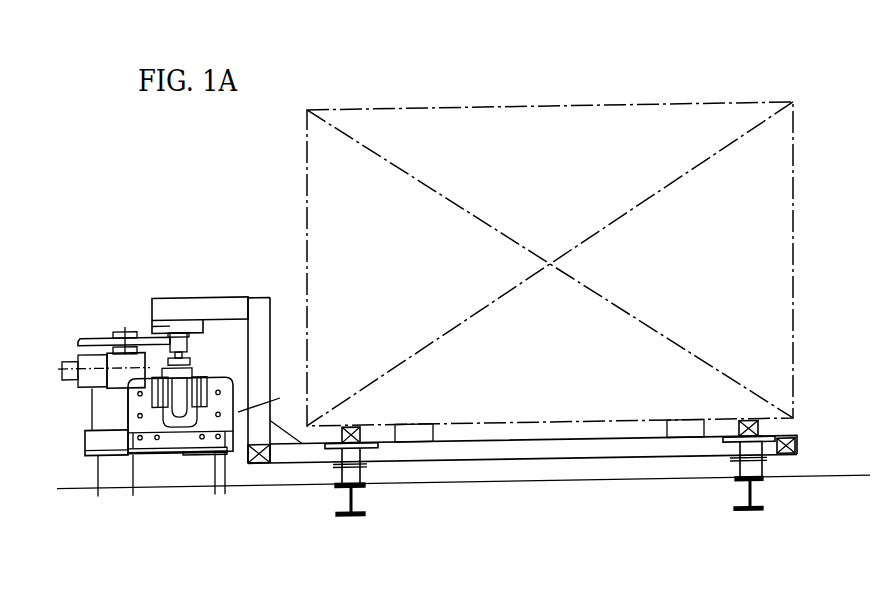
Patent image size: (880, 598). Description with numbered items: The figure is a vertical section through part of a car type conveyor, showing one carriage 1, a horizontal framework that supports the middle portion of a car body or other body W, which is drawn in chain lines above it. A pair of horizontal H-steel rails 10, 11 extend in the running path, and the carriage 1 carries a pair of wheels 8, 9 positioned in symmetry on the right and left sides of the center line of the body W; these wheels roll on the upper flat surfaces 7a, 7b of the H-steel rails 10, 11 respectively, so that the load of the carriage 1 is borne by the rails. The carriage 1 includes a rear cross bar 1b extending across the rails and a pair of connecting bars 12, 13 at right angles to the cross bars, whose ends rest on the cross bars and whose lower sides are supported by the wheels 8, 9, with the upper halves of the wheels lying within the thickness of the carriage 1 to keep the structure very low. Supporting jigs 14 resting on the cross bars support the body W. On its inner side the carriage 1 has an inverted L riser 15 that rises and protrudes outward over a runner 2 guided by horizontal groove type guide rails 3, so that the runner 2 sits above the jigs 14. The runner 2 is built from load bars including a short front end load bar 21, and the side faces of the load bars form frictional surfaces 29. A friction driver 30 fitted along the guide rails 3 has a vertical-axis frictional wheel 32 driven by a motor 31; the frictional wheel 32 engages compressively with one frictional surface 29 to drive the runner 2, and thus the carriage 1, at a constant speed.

The body W is at (575, 115).
The carriage 1 is at (627, 437).
The rear cross bar 1b is at (560, 469).
The runner 2 is at (200, 365).
The guide rails 3 is at (217, 404).
The upper flat surface 7a is at (363, 483).
The upper flat surface 7b is at (762, 483).
The wheel 8 is at (340, 478).
The wheel 9 is at (742, 482).
The H-steel rail 10 is at (350, 521).
The H-steel rail 11 is at (750, 524).
The connecting bar 12 is at (353, 433).
The connecting bar 13 is at (750, 433).
The supporting jigs 14 is at (413, 431).
The inverted L riser 15 is at (195, 301).
The front end load bar 21 is at (205, 303).
The frictional surfaces 29 is at (143, 329).
The friction driver 30 is at (97, 334).
The motor 31 is at (87, 389).
The frictional wheel 32 is at (95, 333).